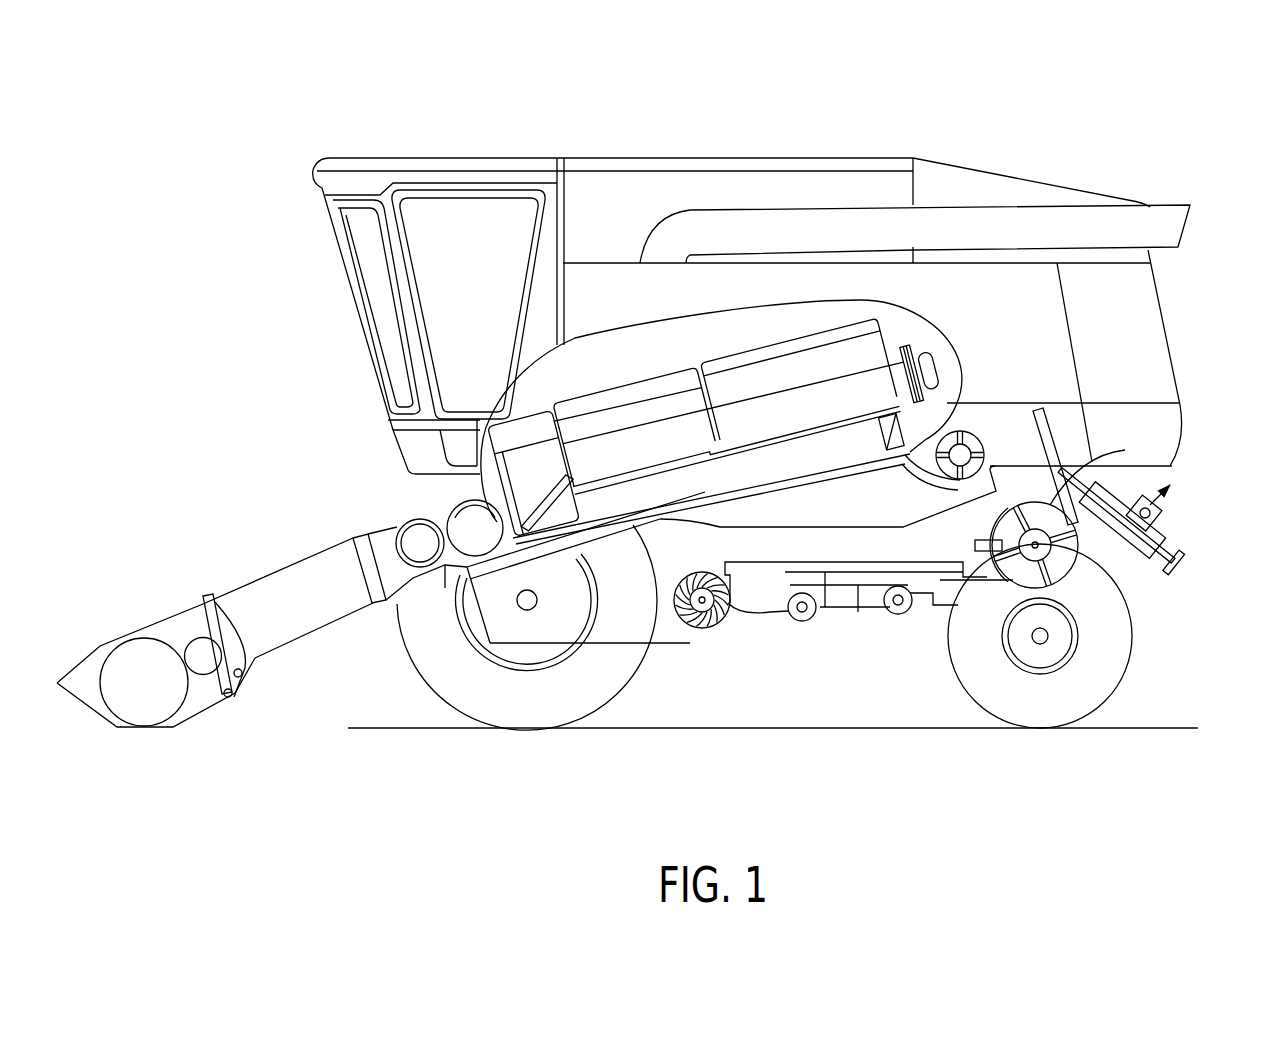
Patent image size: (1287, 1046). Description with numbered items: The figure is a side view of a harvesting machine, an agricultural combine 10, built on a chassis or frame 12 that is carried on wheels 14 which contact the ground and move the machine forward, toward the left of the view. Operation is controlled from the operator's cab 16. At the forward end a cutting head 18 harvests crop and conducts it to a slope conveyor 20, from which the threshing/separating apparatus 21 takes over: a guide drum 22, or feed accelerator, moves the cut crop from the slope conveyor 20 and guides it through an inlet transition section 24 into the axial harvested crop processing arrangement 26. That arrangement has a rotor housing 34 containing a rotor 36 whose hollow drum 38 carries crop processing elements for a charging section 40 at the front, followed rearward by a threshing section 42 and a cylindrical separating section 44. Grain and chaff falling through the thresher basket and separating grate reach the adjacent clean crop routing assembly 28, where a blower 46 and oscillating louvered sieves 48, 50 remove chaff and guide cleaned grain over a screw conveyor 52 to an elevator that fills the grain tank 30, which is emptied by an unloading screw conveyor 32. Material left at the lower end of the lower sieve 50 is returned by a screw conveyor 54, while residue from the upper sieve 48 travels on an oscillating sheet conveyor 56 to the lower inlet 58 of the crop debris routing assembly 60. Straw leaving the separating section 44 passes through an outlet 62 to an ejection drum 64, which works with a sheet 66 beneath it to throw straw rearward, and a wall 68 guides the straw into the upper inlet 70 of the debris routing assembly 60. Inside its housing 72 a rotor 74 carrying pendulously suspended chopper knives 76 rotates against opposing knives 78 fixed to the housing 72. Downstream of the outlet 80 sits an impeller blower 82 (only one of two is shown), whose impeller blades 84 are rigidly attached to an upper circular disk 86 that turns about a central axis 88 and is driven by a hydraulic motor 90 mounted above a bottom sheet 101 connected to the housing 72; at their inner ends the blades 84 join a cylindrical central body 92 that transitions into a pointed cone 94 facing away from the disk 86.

The agricultural combine 10 is at (986, 103).
The frame 12 is at (770, 557).
The wheels 14 is at (605, 680).
The operator's cab 16 is at (438, 212).
The cutting head 18 is at (185, 628).
The slope conveyor 20 is at (272, 605).
The threshing/separating apparatus 21 is at (412, 452).
The guide drum 22 is at (440, 512).
The inlet transition section 24 is at (530, 500).
The axial harvested crop processing arrangement 26 is at (807, 490).
The clean crop routing assembly 28 is at (842, 618).
The grain tank 30 is at (612, 222).
The unloading screw conveyor 32 is at (1002, 240).
The rotor housing 34 is at (660, 512).
The rotor 36 is at (600, 512).
The hollow drum 38 is at (880, 358).
The charging section 40 is at (512, 426).
The threshing section 42 is at (624, 389).
The separating section 44 is at (791, 352).
The blower 46 is at (706, 613).
The upper sieve 48 is at (827, 620).
The lower sieve 50 is at (860, 617).
The screw conveyor 52 is at (800, 622).
The screw conveyor 54 is at (900, 617).
The oscillating sheet conveyor 56 is at (979, 578).
The lower inlet 58 is at (1012, 570).
The crop debris routing assembly 60 is at (1093, 588).
The outlet 62 is at (935, 502).
The ejection drum 64 is at (963, 440).
The sheet 66 is at (922, 474).
The wall 68 is at (1052, 450).
The upper inlet 70 is at (1010, 512).
The housing 72 is at (1060, 582).
The rotor 74 is at (1082, 466).
The chopper knives 76 is at (1013, 487).
The opposing knives 78 is at (975, 543).
The outlet 80 is at (1100, 578).
The impeller blower 82 is at (1214, 491).
The impeller blades 84 is at (1160, 567).
The upper circular disk 86 is at (1152, 483).
The central axis 88 is at (1160, 505).
The hydraulic motor 90 is at (1172, 530).
The cylindrical central body 92 is at (1137, 568).
The cone 94 is at (1128, 565).
The bottom sheet 101 is at (1147, 473).